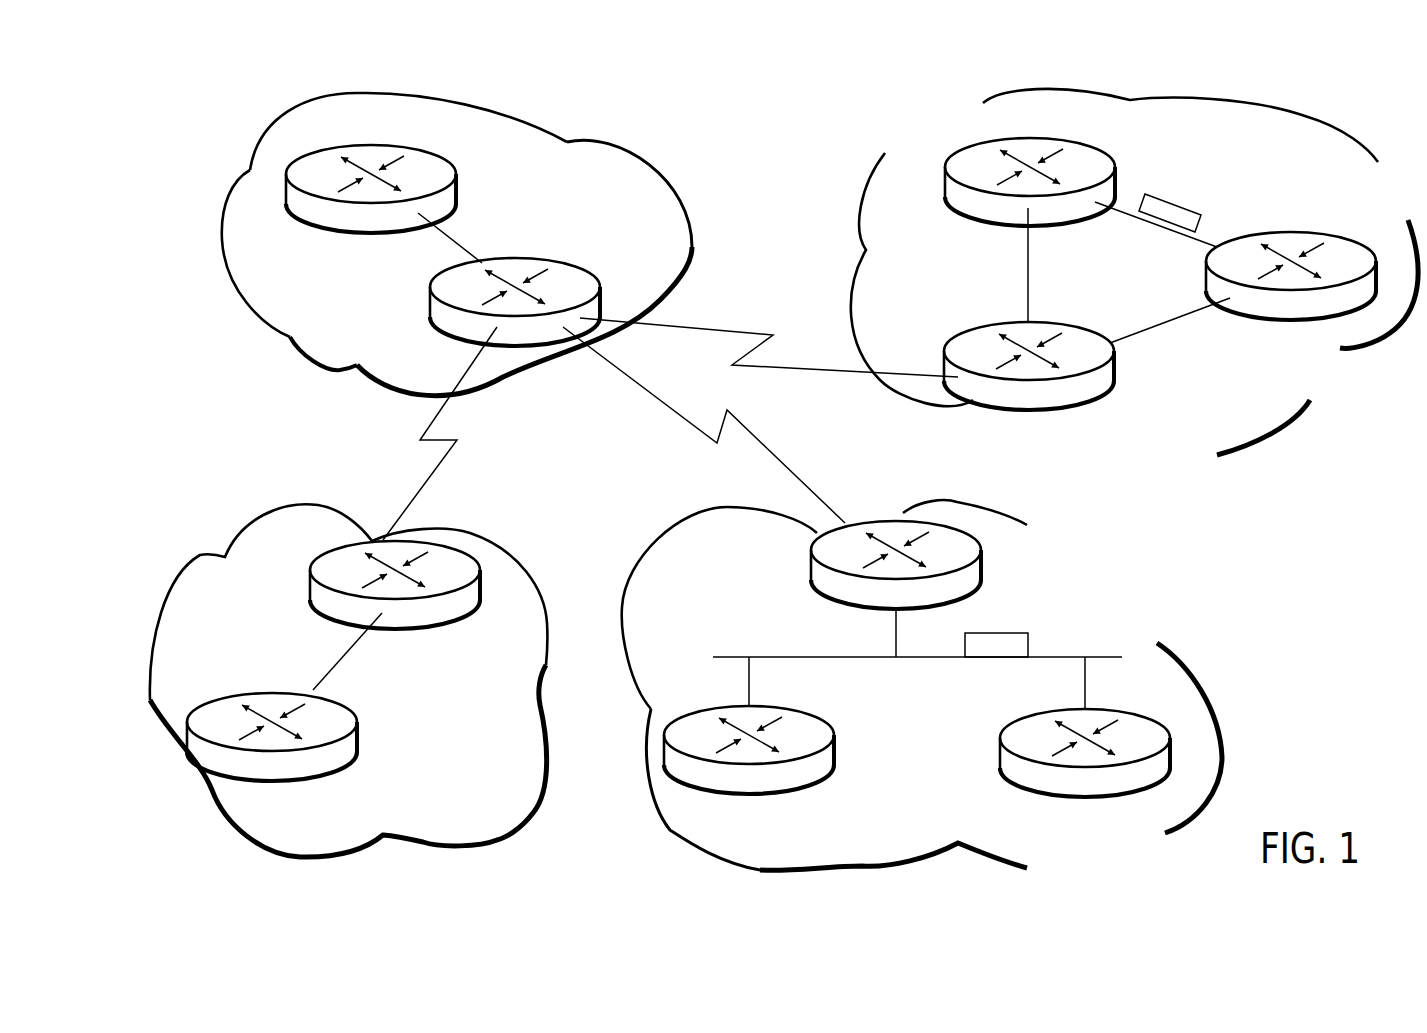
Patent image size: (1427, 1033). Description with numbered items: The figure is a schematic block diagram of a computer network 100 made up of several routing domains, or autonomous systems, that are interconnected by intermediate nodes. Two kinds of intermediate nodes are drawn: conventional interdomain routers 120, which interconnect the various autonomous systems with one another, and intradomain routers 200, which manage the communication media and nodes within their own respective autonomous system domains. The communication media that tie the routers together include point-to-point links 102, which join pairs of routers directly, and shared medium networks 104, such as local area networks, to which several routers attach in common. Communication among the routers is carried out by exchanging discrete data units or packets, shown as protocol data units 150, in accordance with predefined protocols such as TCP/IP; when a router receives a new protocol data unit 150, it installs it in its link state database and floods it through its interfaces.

The computer network 100 is at (223, 143).
The point-to-point link 102 is at (445, 237).
The shared medium network 104 is at (920, 660).
The interdomain router 120 is at (1027, 560).
The protocol data unit 150 is at (1028, 633).
The intradomain router 200 is at (1060, 823).